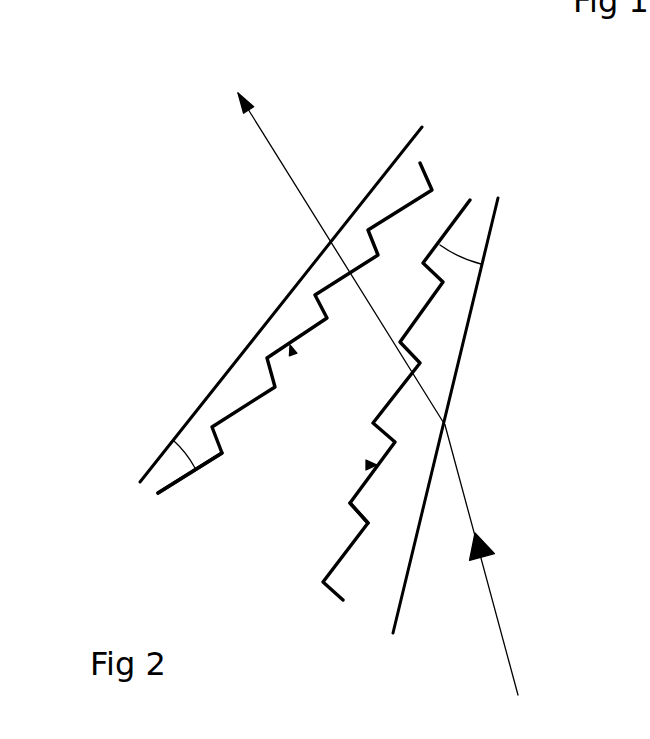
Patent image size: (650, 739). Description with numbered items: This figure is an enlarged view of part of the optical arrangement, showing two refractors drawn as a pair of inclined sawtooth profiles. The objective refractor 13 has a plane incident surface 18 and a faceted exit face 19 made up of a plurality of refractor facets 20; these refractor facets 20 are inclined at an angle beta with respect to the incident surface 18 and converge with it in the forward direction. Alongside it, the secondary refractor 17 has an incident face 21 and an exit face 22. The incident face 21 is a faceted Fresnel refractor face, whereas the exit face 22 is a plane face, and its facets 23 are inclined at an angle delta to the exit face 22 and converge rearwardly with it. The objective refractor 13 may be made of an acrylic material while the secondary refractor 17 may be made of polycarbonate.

The objective refractor 13 is at (450, 318).
The secondary refractor 17 is at (290, 317).
The plane incident surface 18 is at (460, 372).
The faceted exit face 19 is at (368, 465).
The refractor facets 20 is at (368, 523).
The incident face 21 is at (292, 351).
The exit face 22 is at (397, 155).
The facets 23 is at (180, 483).